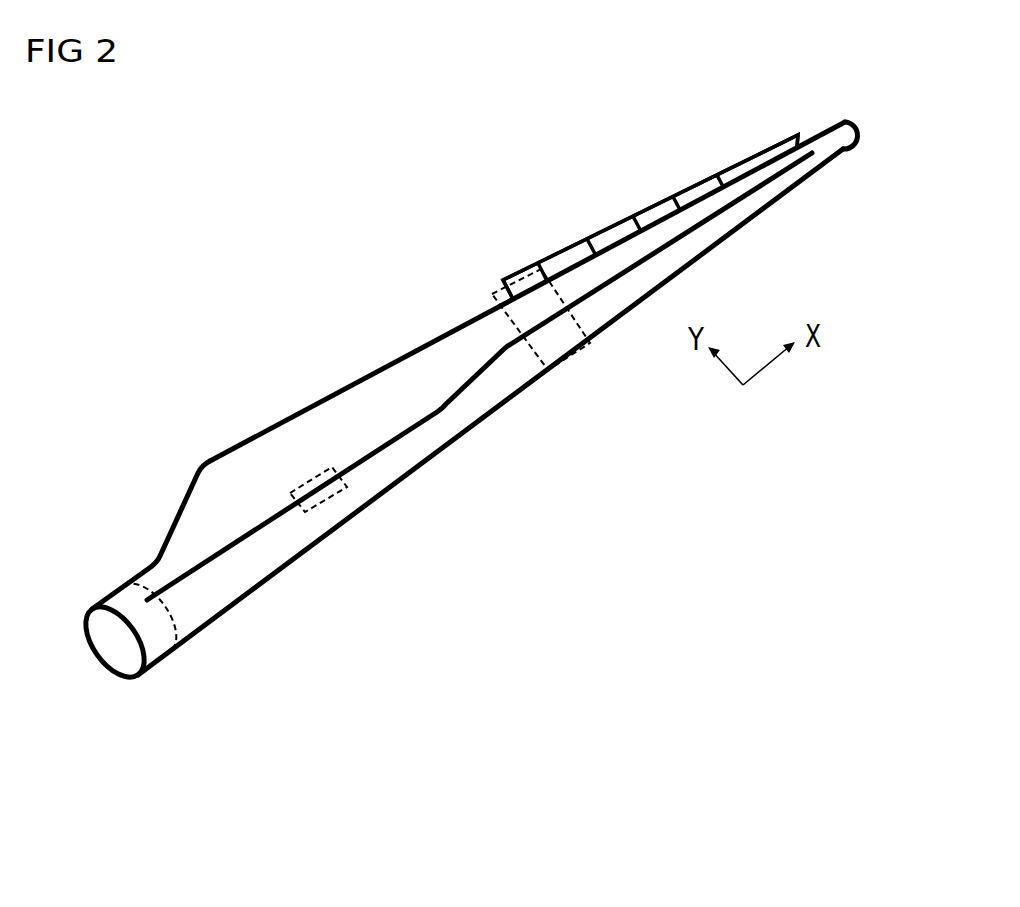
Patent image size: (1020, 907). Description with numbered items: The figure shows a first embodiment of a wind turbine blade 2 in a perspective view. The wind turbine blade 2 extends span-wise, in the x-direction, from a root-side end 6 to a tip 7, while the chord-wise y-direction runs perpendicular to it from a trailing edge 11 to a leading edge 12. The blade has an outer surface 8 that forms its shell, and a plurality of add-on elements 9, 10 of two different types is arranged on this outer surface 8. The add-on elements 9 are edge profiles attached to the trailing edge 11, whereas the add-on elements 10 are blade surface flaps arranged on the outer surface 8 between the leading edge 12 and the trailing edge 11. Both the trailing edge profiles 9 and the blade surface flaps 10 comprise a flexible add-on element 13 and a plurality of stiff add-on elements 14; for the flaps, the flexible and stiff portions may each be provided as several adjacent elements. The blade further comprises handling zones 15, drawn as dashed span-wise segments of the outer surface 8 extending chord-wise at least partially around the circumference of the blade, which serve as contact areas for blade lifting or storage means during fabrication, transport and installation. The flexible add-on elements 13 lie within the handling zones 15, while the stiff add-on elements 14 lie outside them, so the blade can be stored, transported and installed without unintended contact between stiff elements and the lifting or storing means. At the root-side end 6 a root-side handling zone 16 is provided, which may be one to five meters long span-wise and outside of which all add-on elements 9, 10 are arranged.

The wind turbine blade 2 is at (696, 123).
The root-side end 6 is at (129, 682).
The tip 7 is at (858, 128).
The outer surface 8 is at (205, 520).
The add-on elements (edge profiles) 9 is at (528, 275).
The add-on elements (blade surface flaps) 10 is at (223, 552).
The trailing edge 11 is at (235, 445).
The leading edge 12 is at (308, 549).
The flexible add-on element 13 is at (525, 390).
The stiff add-on element 14 is at (793, 134).
The handling zone 15 is at (116, 583).
The root-side handling zone 16 is at (132, 582).